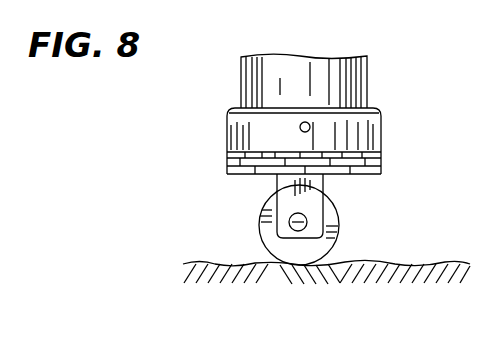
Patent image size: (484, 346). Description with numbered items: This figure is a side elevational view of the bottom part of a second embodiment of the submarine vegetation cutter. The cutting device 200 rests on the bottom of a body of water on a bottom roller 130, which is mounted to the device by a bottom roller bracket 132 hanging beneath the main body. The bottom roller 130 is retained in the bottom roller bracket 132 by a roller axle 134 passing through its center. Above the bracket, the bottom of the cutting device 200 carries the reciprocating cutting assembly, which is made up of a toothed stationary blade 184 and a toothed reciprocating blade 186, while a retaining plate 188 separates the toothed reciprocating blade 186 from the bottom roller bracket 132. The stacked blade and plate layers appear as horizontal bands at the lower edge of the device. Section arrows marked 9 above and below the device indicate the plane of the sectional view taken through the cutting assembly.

The section line 9- 9 is at (303, 12).
The cutting device 200 is at (384, 85).
The toothed stationary blade 184 is at (381, 155).
The toothed reciprocating blade 186 is at (227, 166).
The retaining plate 188 is at (250, 176).
The bottom roller bracket 132 is at (306, 199).
The bottom roller 130 is at (340, 237).
The roller axle 134 is at (298, 224).